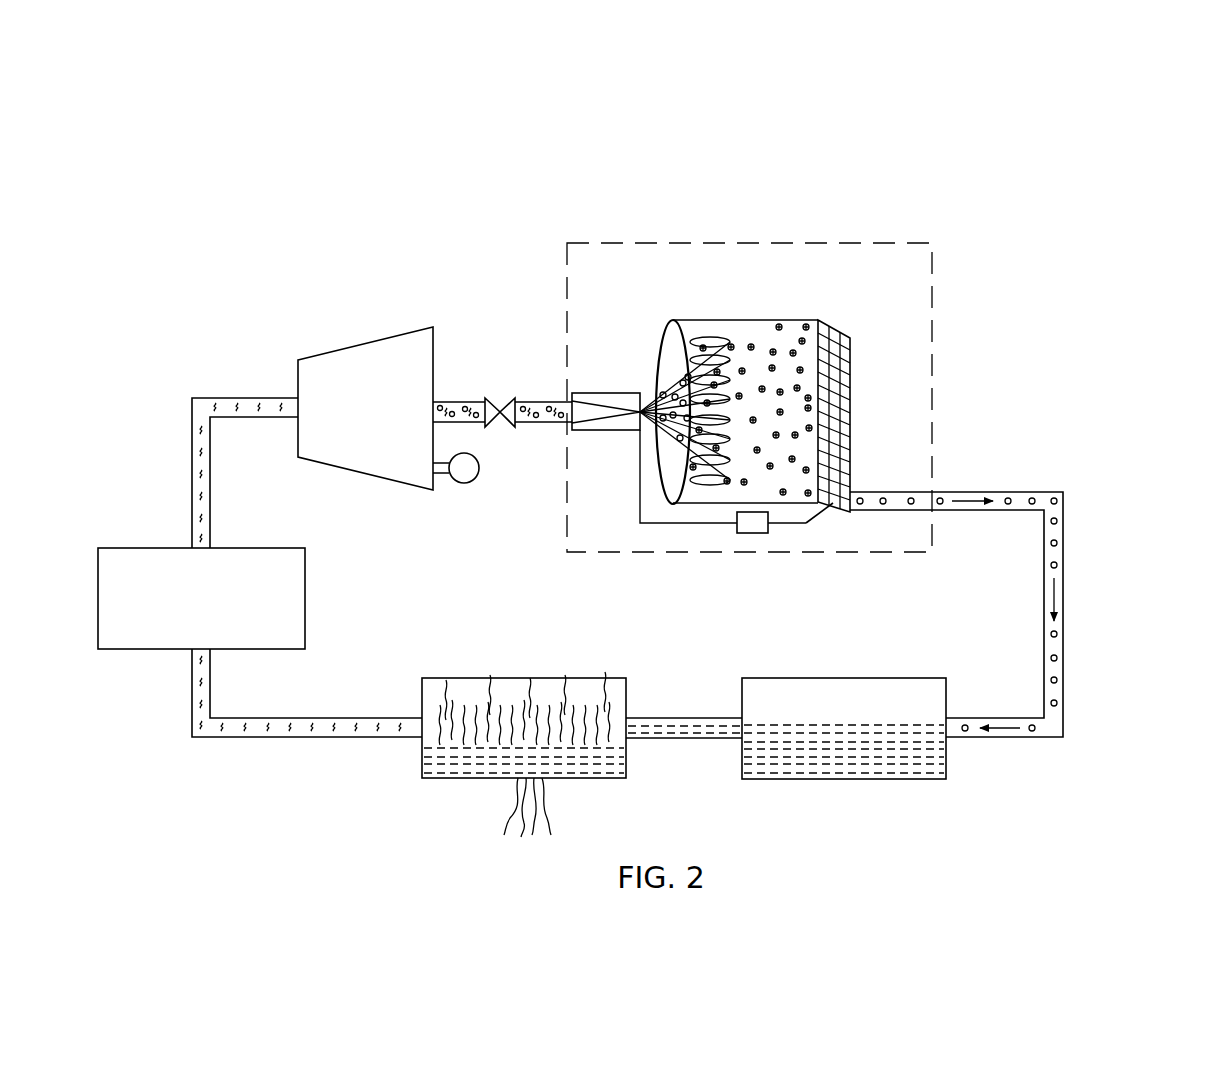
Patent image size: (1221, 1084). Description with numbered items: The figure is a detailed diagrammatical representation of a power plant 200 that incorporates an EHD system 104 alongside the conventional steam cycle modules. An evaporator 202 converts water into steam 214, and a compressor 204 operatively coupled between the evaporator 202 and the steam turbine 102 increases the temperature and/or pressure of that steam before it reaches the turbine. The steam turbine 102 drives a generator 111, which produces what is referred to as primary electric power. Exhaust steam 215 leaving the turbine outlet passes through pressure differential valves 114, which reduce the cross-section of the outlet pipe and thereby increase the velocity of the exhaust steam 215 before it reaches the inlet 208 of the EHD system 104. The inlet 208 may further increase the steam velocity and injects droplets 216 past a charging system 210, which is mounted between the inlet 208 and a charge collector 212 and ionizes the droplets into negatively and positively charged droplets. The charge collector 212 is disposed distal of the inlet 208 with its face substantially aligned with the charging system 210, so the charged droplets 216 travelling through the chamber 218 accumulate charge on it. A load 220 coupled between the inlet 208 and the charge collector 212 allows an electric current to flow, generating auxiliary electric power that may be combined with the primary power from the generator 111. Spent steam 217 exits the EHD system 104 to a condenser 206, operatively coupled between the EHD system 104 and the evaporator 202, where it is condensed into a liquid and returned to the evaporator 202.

The cooling system 200 is at (1080, 214).
The EHD system 104 is at (726, 243).
The steam turbine 102 is at (364, 341).
The steam 214 is at (245, 398).
The compressor 204 is at (147, 548).
The exhaust steam 215 is at (537, 400).
The pressure differential valves 114 is at (515, 428).
The generator 111 is at (465, 483).
The inlet 208 is at (597, 432).
The charging system 210 is at (668, 322).
The charged droplet chamber 218 is at (735, 320).
The charge collector 212 is at (830, 325).
The charged droplets 216 is at (807, 495).
The load 220 is at (749, 533).
The spent steam 217 is at (1006, 492).
The evaporator 202 is at (522, 678).
The condenser 206 is at (862, 678).